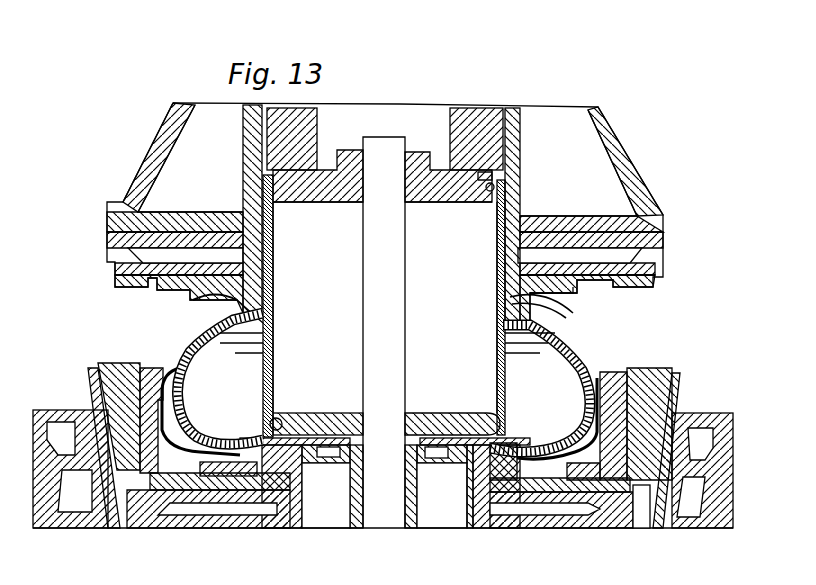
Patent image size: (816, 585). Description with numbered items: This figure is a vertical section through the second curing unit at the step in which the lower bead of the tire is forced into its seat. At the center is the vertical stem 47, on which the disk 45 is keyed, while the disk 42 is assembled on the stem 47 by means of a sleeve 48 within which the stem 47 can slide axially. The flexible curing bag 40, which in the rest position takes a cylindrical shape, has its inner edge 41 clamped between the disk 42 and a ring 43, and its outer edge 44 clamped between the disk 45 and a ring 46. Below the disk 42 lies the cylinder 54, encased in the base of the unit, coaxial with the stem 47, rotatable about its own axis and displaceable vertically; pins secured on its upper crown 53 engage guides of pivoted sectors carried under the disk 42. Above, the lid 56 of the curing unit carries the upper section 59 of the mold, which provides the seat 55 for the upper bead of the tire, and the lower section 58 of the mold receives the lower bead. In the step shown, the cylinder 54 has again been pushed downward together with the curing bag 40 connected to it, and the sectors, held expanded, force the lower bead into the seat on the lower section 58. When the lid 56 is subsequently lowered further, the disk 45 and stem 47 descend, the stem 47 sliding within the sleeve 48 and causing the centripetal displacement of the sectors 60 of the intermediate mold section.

The curing bag 40 is at (275, 267).
The inner edge 41 is at (303, 413).
The disk 42 is at (437, 426).
The ring 43 is at (281, 417).
The outer edge 44 is at (500, 187).
The disk 45 is at (327, 197).
The ring 46 is at (497, 175).
The stem 47 is at (406, 348).
The sleeve 48 is at (412, 528).
The upper crown 53 is at (458, 458).
The cylinder 54 is at (297, 530).
The seat 55 is at (530, 305).
The lid 56 is at (622, 163).
The lower section 58 is at (210, 520).
The upper section 59 is at (590, 300).
The sectors 60 is at (600, 377).